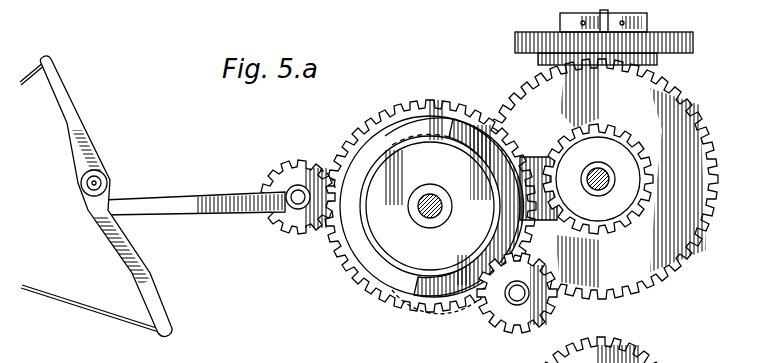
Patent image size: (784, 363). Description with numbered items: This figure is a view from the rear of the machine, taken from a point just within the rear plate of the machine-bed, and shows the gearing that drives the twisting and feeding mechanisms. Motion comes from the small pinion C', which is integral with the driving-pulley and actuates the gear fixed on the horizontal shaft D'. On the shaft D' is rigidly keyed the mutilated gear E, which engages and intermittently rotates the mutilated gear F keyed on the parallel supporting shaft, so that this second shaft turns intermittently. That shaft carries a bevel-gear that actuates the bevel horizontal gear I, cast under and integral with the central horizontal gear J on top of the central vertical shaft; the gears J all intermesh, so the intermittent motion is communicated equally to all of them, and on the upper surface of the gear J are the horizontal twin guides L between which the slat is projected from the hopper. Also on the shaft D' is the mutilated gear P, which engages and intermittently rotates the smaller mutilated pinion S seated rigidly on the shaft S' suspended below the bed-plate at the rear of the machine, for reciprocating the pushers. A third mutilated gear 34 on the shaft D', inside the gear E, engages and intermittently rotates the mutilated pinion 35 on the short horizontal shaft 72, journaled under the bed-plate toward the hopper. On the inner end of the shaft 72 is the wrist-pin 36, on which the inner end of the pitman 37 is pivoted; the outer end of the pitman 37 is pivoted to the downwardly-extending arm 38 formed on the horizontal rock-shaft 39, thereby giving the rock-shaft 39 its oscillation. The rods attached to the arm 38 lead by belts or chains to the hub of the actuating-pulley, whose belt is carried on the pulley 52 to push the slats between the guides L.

The mutilated gear E is at (430, 195).
The mutilated gear P is at (430, 192).
The horizontal shaft D' is at (446, 206).
The mutilated gear F is at (612, 178).
The pinion C' is at (598, 179).
The twin guides L is at (647, 20).
The horizontal gear J is at (694, 37).
The bevel horizontal gear I is at (658, 60).
The mutilated pinion S is at (526, 293).
The shaft S' is at (503, 315).
The mutilated gear 34 is at (422, 300).
The mutilated pinion 35 is at (298, 197).
The wrist-pin 36 is at (318, 178).
The short horizontal shaft 72 is at (296, 200).
The pitman 37 is at (190, 211).
The pulley 52 is at (106, 196).
The downwardly-extending arm 38 is at (128, 250).
The horizontal rock-shaft 39 is at (100, 177).